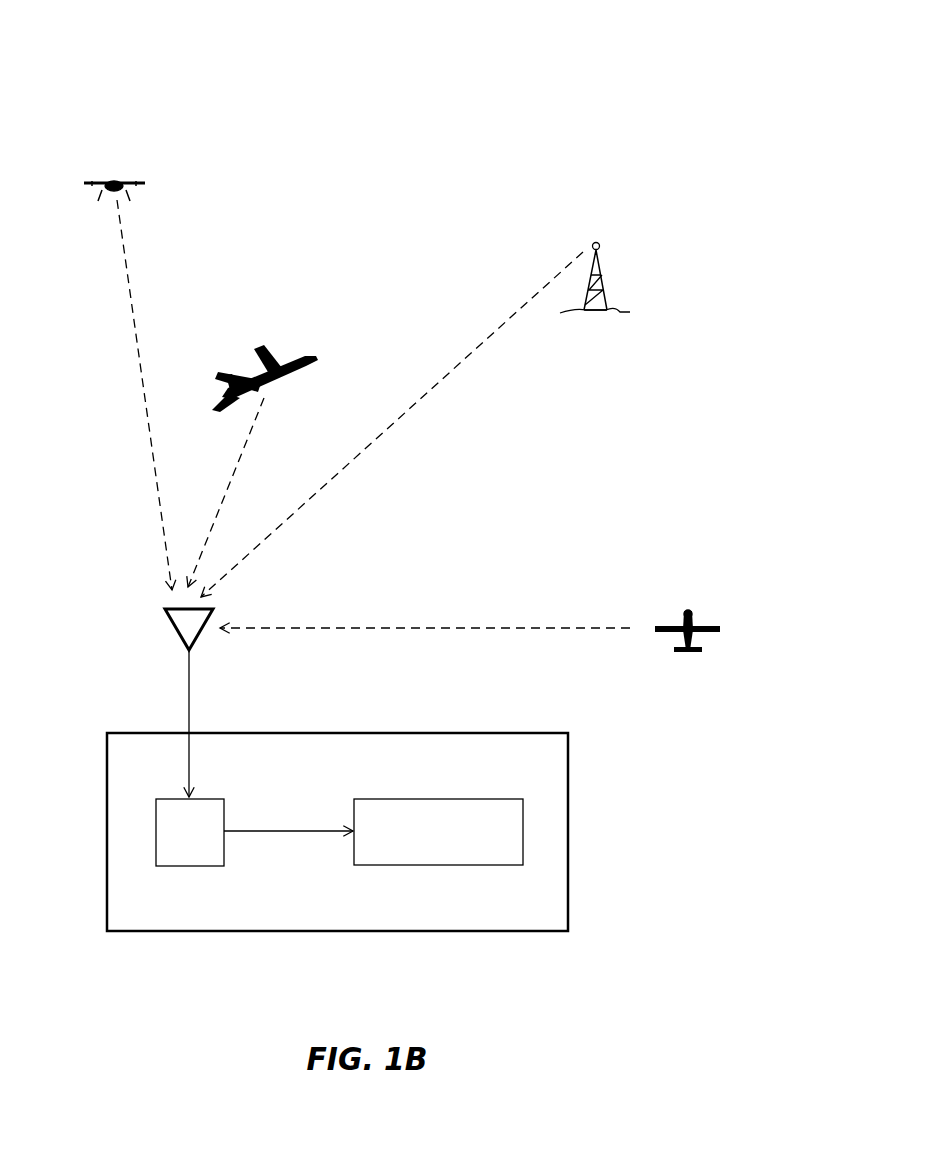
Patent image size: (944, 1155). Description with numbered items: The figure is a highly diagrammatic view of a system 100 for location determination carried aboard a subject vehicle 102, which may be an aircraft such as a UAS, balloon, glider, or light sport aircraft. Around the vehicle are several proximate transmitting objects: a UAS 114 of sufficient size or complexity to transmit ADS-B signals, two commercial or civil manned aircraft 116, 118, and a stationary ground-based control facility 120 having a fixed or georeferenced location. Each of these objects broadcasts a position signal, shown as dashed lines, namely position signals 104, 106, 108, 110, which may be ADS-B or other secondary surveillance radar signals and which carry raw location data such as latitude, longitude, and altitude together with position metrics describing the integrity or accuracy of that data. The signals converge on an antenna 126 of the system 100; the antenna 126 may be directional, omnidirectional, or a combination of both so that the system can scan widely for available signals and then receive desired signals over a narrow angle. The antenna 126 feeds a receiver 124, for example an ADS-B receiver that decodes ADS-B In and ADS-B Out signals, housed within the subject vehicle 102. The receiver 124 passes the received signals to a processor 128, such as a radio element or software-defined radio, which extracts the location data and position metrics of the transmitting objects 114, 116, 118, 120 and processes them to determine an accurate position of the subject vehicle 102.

The system for location determination 100 is at (66, 62).
The subject vehicle 102 is at (488, 769).
The position signal 104 is at (138, 338).
The position signal 106 is at (234, 476).
The position signal 108 is at (428, 627).
The position signal 110 is at (460, 355).
The proximate transmitting object (UAS) 114 is at (117, 178).
The proximate transmitting object (manned aircraft) 116 is at (276, 350).
The proximate transmitting object (manned aircraft) 118 is at (690, 607).
The stationary ground-based control facility 120 is at (599, 318).
The receiver 124 is at (174, 856).
The antenna 126 is at (176, 630).
The processor 128 is at (422, 854).